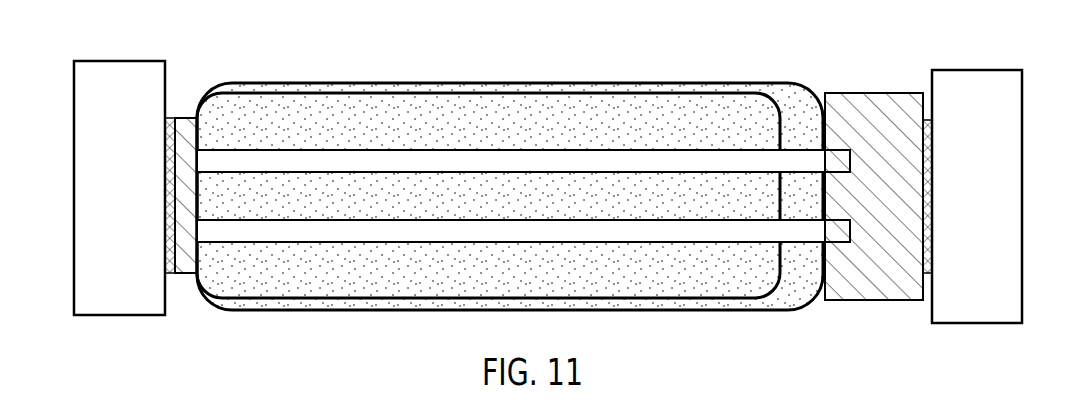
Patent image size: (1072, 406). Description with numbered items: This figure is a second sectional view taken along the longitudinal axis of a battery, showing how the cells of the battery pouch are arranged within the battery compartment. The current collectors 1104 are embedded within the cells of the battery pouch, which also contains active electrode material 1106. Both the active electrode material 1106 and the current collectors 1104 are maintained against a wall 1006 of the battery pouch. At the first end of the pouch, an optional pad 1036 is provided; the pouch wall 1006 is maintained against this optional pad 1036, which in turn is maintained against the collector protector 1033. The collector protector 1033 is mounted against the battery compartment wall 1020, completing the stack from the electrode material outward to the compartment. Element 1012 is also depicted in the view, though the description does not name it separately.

The wall 1006 is at (196, 108).
The right substrate / plate 1012 is at (997, 70).
The battery compartment wall 1020 is at (125, 61).
The collector protector 1033 is at (170, 118).
The pad 1036 is at (185, 273).
The current collectors 1104 is at (740, 157).
The active electrode material 1106 is at (658, 285).